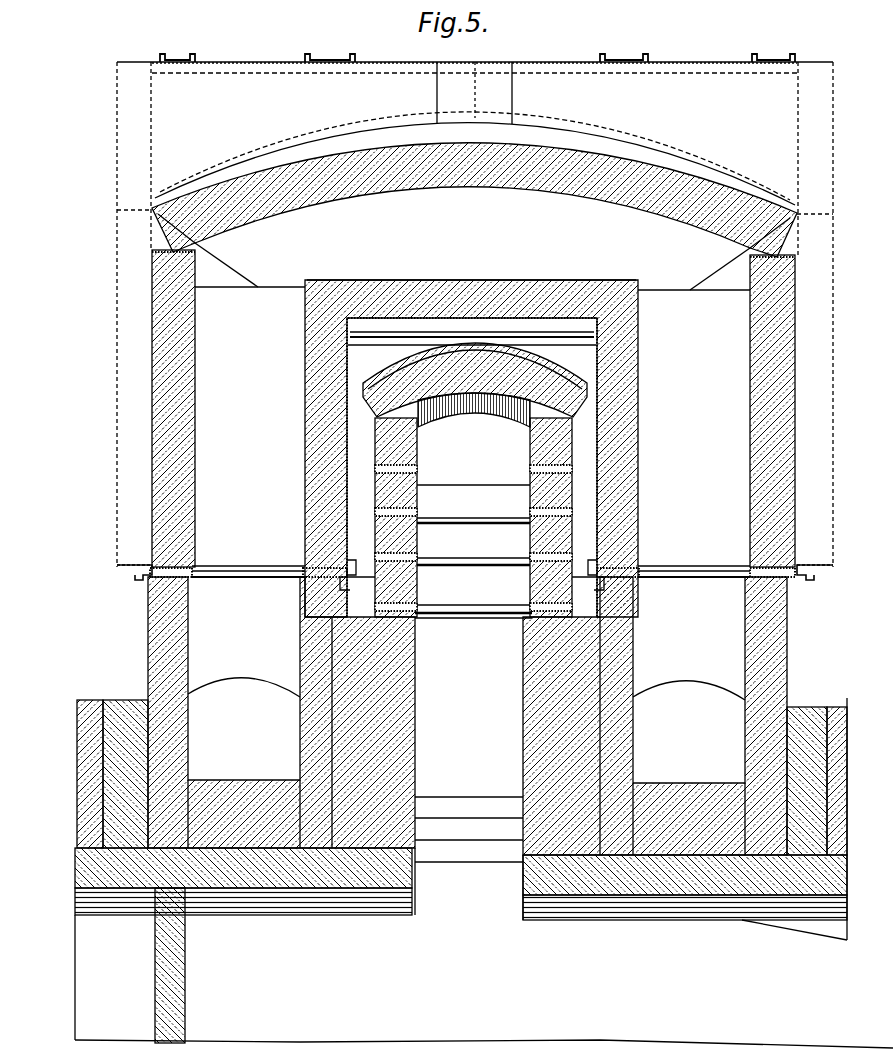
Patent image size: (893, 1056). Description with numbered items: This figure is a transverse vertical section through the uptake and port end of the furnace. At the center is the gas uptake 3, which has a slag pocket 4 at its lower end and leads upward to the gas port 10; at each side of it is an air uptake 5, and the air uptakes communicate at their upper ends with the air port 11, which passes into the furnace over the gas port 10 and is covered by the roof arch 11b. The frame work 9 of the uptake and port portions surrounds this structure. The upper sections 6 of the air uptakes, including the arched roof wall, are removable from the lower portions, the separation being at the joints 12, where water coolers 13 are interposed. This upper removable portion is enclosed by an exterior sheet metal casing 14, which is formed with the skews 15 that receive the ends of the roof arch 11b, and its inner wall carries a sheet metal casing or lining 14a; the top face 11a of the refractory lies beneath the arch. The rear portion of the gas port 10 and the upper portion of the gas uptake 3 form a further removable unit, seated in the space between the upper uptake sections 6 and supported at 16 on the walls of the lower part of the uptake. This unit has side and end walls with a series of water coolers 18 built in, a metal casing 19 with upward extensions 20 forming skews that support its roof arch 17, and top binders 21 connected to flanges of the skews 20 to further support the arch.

The gas uptake 3 is at (469, 812).
The slag pocket 4 is at (484, 873).
The air uptakes 5 is at (467, 716).
The upper sections of the air uptakes 6 is at (472, 358).
The frame work of the uptake and port portions 9 is at (474, 84).
The gas port 10 is at (473, 472).
The air port 11 is at (471, 426).
The top face of core block 11a is at (482, 280).
The roof arch 11b is at (488, 187).
The joints 12 is at (143, 573).
The water coolers 13 is at (240, 564).
The exterior sheet metal casing 14 is at (152, 362).
The sheet metal casing or lining 14a is at (352, 333).
The skews 15 is at (172, 238).
The support 16 is at (485, 619).
The roof arch 17 is at (482, 402).
The water coolers 18 is at (418, 514).
The metal casing 19 is at (472, 539).
The upward extensions 20 is at (380, 419).
The top binders 21 is at (558, 378).